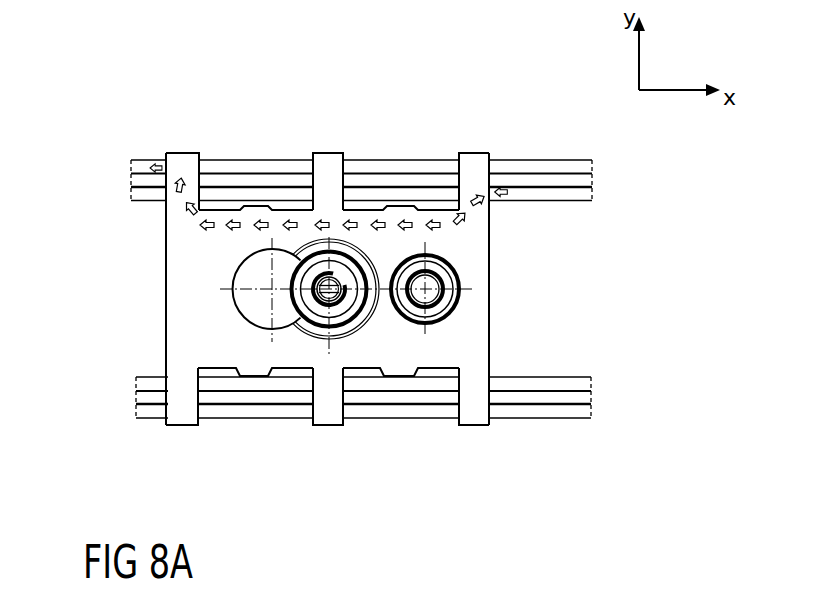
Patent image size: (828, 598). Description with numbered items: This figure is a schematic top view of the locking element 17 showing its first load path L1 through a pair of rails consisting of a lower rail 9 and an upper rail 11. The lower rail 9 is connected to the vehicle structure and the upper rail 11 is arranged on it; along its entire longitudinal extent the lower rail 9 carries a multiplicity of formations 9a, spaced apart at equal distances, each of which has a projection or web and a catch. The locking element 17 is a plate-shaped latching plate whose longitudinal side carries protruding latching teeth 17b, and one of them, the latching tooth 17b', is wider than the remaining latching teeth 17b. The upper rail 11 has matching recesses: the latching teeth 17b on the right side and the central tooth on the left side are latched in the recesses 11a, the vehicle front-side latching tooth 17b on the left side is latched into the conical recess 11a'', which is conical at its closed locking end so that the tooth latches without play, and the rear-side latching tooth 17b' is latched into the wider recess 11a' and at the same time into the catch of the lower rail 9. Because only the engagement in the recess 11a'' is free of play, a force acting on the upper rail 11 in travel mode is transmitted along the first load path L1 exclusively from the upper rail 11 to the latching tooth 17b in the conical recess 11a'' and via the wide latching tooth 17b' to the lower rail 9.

The lower rail 9 is at (580, 165).
The formation 9a is at (205, 163).
The upper rail 11 is at (138, 196).
The recess 11a is at (548, 420).
The recess 11a' is at (134, 142).
The recess 11a'' is at (548, 227).
The locking element 17 is at (473, 323).
The latching tooth 17b is at (343, 290).
The latching tooth 17b' is at (195, 145).
The first load path L1 is at (143, 167).